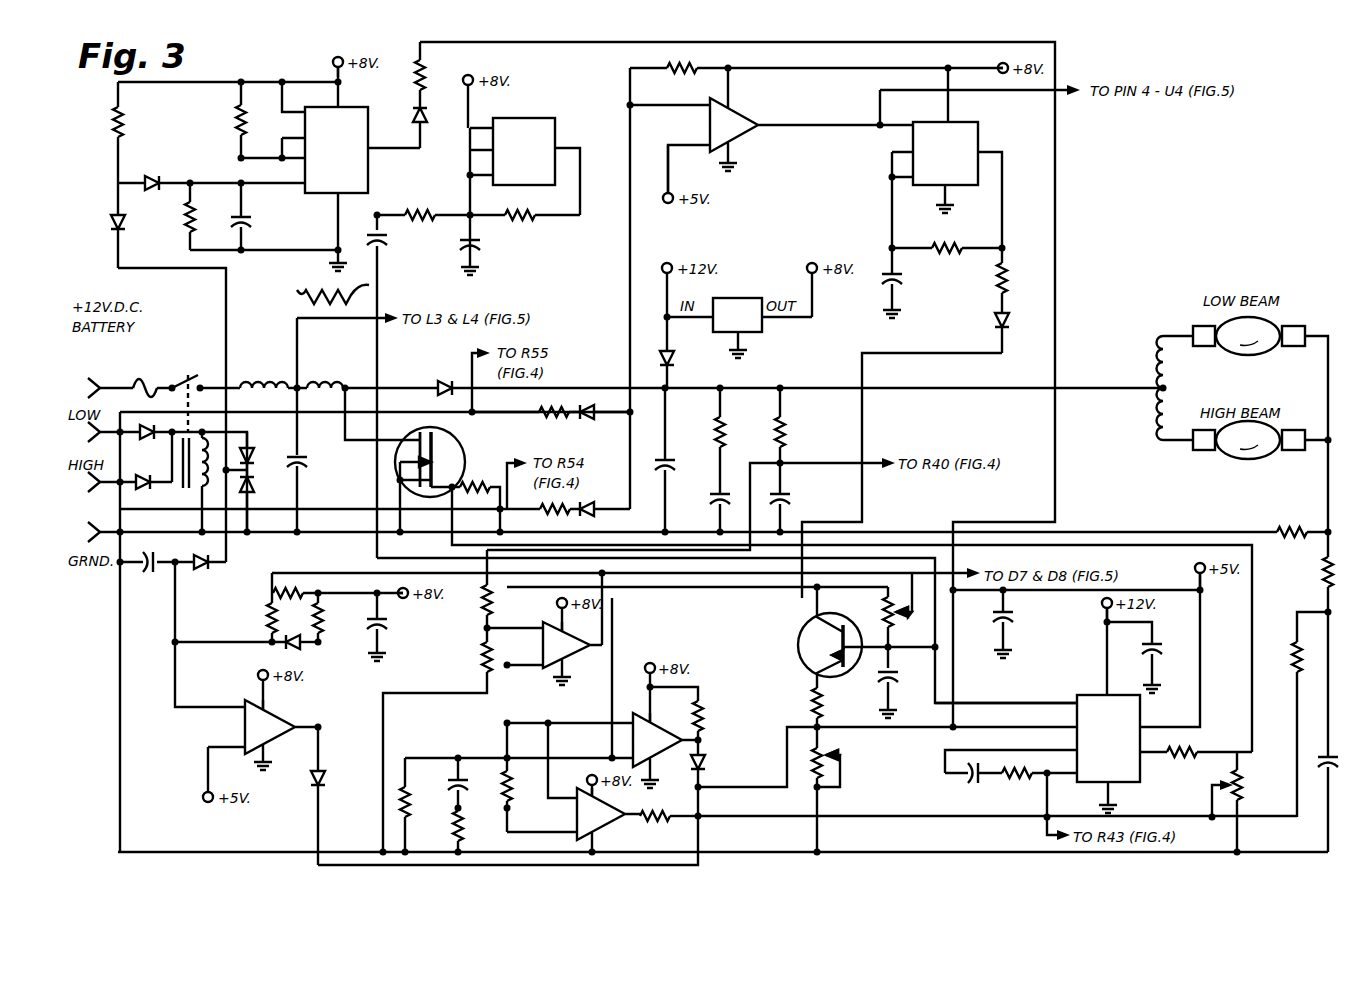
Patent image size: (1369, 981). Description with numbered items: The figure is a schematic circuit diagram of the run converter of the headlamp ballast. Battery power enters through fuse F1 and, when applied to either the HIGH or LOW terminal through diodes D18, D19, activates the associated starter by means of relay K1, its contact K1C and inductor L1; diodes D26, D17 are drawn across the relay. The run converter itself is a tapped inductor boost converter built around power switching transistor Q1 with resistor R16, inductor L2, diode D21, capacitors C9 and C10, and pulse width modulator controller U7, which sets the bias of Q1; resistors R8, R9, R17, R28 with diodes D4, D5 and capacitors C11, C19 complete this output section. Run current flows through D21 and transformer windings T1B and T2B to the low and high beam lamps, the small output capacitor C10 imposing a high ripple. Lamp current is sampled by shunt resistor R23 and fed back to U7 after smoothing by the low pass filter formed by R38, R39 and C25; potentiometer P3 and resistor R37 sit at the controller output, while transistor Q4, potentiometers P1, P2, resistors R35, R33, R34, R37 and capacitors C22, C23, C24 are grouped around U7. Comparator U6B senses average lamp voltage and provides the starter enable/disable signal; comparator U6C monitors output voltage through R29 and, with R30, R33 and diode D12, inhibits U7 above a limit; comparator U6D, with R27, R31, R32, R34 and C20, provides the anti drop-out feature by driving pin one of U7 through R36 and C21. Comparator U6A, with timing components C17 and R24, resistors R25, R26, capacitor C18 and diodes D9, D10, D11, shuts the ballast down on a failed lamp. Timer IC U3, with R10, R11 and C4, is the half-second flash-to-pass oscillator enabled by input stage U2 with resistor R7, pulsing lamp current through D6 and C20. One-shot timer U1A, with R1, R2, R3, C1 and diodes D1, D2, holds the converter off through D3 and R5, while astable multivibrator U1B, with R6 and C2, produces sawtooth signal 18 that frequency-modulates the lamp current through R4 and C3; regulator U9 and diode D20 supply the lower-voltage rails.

The resistor R1 is at (123, 122).
The resistor R2 is at (236, 124).
The resistor R3 is at (185, 218).
The resistor R4 is at (420, 210).
The resistor R5 is at (426, 76).
The resistor R6 is at (516, 224).
The resistor R7 is at (680, 72).
The resistor R8 is at (542, 516).
The resistor R9 is at (551, 416).
The resistor R10 is at (958, 237).
The resistor R11 is at (1007, 278).
The resistor R16 is at (476, 482).
The resistor R17 is at (786, 430).
The shunt resistor R23 is at (1290, 525).
The timing resistor R24 is at (266, 618).
The resistor R25 is at (308, 587).
The resistor R26 is at (325, 629).
The resistor R27 is at (415, 796).
The resistor R28 is at (726, 432).
The resistor R29 is at (481, 604).
The resistor R30 is at (480, 660).
The resistor R31 is at (452, 826).
The resistor R32 is at (532, 812).
The resistor R33 is at (708, 724).
The resistor R34 is at (668, 809).
The resistor R35 is at (822, 702).
The resistor R36 is at (1016, 778).
The resistor R37 is at (1182, 758).
The filter resistor R38 is at (1322, 576).
The filter resistor R39 is at (1290, 654).
The capacitor C1 is at (252, 222).
The capacitor C2 is at (482, 242).
The capacitor C3 is at (393, 244).
The capacitor C4 is at (902, 277).
The capacitor C9 is at (308, 458).
The output capacitor C10 is at (690, 452).
The capacitor C11 is at (792, 500).
The timing capacitor C17 is at (150, 576).
The capacitor C18 is at (392, 624).
The capacitor C19 is at (712, 502).
The capacitor C20 is at (480, 782).
The capacitor C21 is at (966, 782).
The capacitor C22 is at (900, 677).
The capacitor C23 is at (1020, 614).
The capacitor C24 is at (1162, 649).
The filter capacitor C25 is at (1348, 737).
The diode D1 is at (146, 176).
The diode D2 is at (121, 226).
The diode D3 is at (414, 110).
The diode D4 is at (598, 517).
The diode D5 is at (588, 420).
The diode D6 is at (992, 322).
The diode D9 is at (204, 576).
The diode D10 is at (282, 648).
The diode D11 is at (330, 782).
The diode D12 is at (710, 772).
The diode D17 is at (252, 486).
The diode D18 is at (144, 422).
The diode D19 is at (132, 492).
The diode D20 is at (680, 360).
The diode D21 is at (440, 378).
The diode D26 is at (252, 448).
The one-shot timer U1A is at (285, 169).
The astable multivibrator U1B is at (525, 176).
The input stage U2 is at (755, 130).
The timer IC U3 is at (941, 165).
The comparator U6A is at (263, 735).
The comparator U6B is at (544, 653).
The comparator U6C is at (665, 737).
The comparator U6D is at (573, 820).
The pulse width modulator controller U7 is at (1044, 746).
The integrated circuit U9 is at (739, 328).
The power switching transistor Q1 is at (430, 479).
The transistor Q4 is at (866, 637).
The potentiometer P1 is at (884, 614).
The potentiometer P2 is at (850, 762).
The potentiometer P3 is at (1268, 771).
The inductor L1 is at (256, 378).
The inductor L2 is at (328, 378).
The relay K1 is at (188, 490).
The relay contact K1C is at (186, 376).
The fuse F1 is at (144, 380).
The transformer winding T1B is at (1154, 358).
The transformer winding T2B is at (1154, 428).
The sawtooth signal 18 is at (326, 290).